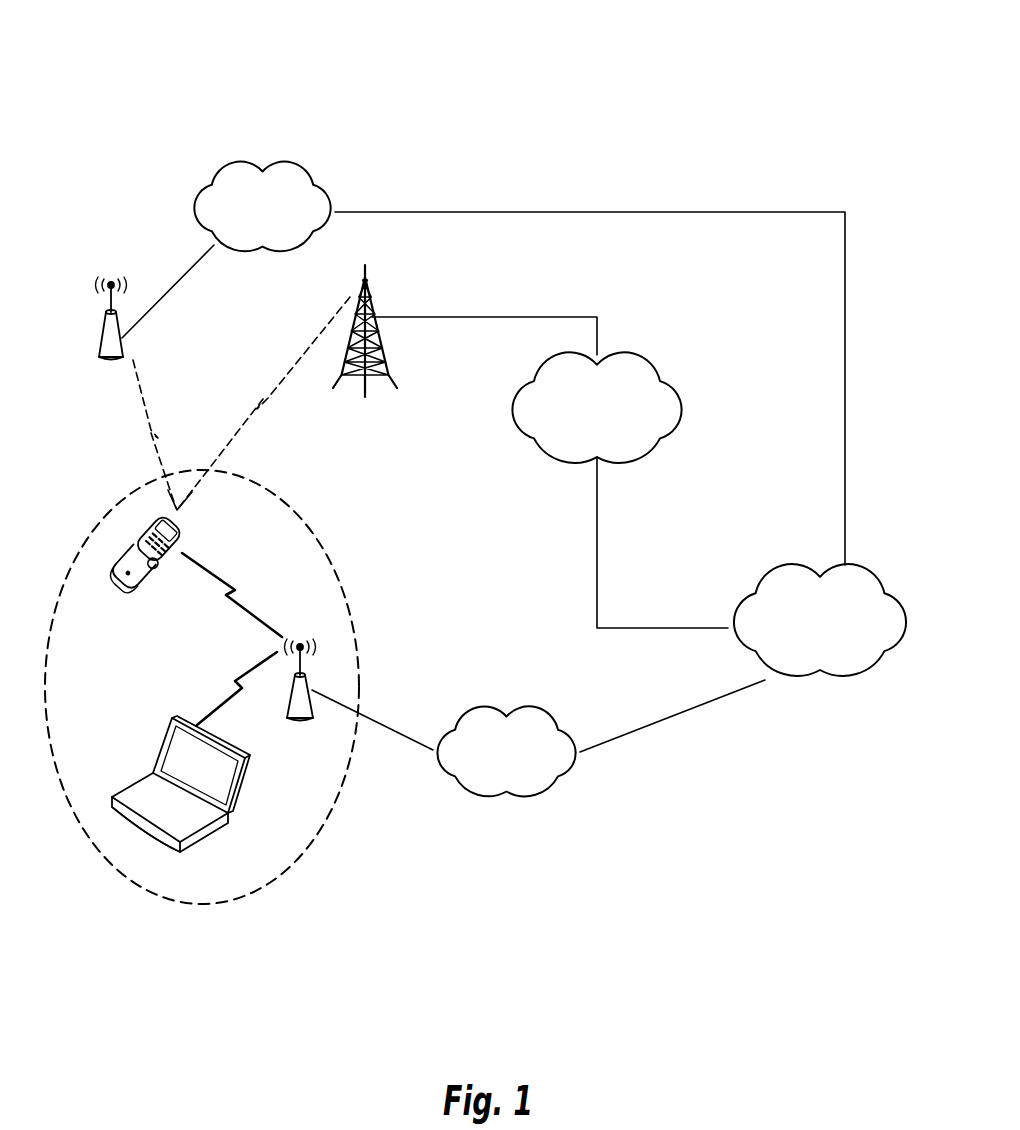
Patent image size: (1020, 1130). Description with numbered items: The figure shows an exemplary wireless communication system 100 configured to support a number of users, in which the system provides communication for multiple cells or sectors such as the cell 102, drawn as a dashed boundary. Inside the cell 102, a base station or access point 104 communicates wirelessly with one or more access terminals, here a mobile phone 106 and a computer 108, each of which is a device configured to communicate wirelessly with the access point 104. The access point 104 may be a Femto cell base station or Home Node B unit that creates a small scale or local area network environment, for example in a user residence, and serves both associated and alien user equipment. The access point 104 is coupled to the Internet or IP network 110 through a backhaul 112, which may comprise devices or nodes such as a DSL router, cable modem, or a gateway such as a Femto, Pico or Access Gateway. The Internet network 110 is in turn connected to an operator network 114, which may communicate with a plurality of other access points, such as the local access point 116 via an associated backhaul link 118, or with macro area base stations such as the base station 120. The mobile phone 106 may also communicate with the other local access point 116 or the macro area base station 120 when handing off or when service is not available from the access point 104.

The wireless communication system 100 is at (648, 73).
The cell 102 is at (200, 905).
The access point 104 is at (298, 721).
The mobile phone 106 is at (178, 526).
The computer 108 is at (207, 837).
The Internet or IP network 110 is at (845, 683).
The backhaul 112 is at (533, 802).
The operator network 114 is at (568, 470).
The local access point 116 is at (100, 358).
The backhaul link 118 is at (242, 162).
The macro area base station 120 is at (388, 370).